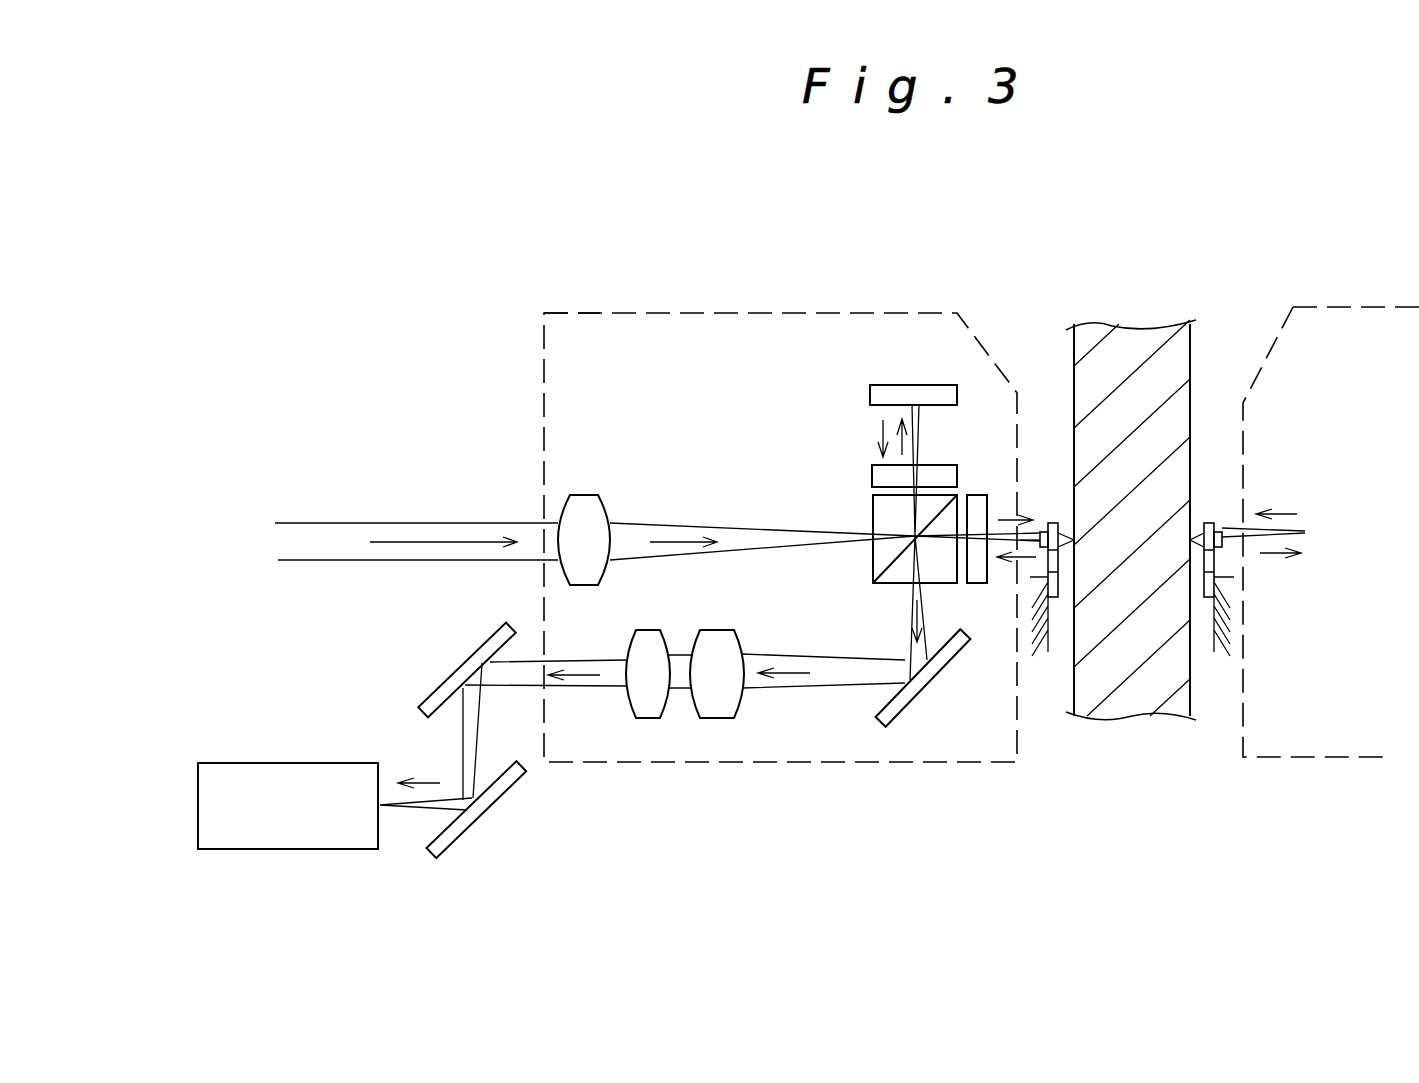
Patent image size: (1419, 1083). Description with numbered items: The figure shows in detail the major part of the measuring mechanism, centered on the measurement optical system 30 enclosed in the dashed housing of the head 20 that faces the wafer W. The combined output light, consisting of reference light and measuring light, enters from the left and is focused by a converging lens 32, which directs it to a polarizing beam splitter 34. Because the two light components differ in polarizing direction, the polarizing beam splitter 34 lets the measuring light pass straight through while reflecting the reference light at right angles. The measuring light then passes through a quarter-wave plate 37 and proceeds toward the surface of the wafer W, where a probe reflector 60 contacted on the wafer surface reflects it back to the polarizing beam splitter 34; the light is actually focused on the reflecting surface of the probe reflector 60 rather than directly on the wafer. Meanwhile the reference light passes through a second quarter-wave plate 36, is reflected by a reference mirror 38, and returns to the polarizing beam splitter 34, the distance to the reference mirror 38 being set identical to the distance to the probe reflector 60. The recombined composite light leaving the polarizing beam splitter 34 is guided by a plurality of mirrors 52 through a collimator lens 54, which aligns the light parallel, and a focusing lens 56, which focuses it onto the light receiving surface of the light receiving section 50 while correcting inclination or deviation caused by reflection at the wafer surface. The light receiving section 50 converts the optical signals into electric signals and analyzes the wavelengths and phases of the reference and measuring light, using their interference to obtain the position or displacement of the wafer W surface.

The distance measuring head 20 is at (700, 306).
The measurement optical system 30 is at (623, 310).
The converging lens 32 is at (584, 520).
The polarizing beam splitter 34 is at (880, 505).
The λ/4-wave plate 36 is at (870, 470).
The λ/4-wave plate 37 is at (976, 495).
The reference mirror 38 is at (900, 385).
The light receiving section 50 is at (278, 815).
The mirrors 52 is at (877, 730).
The collimator lens 54 is at (717, 705).
The focusing lens 56 is at (648, 705).
The probe reflector 60 is at (1053, 522).
The wafer W is at (1118, 352).